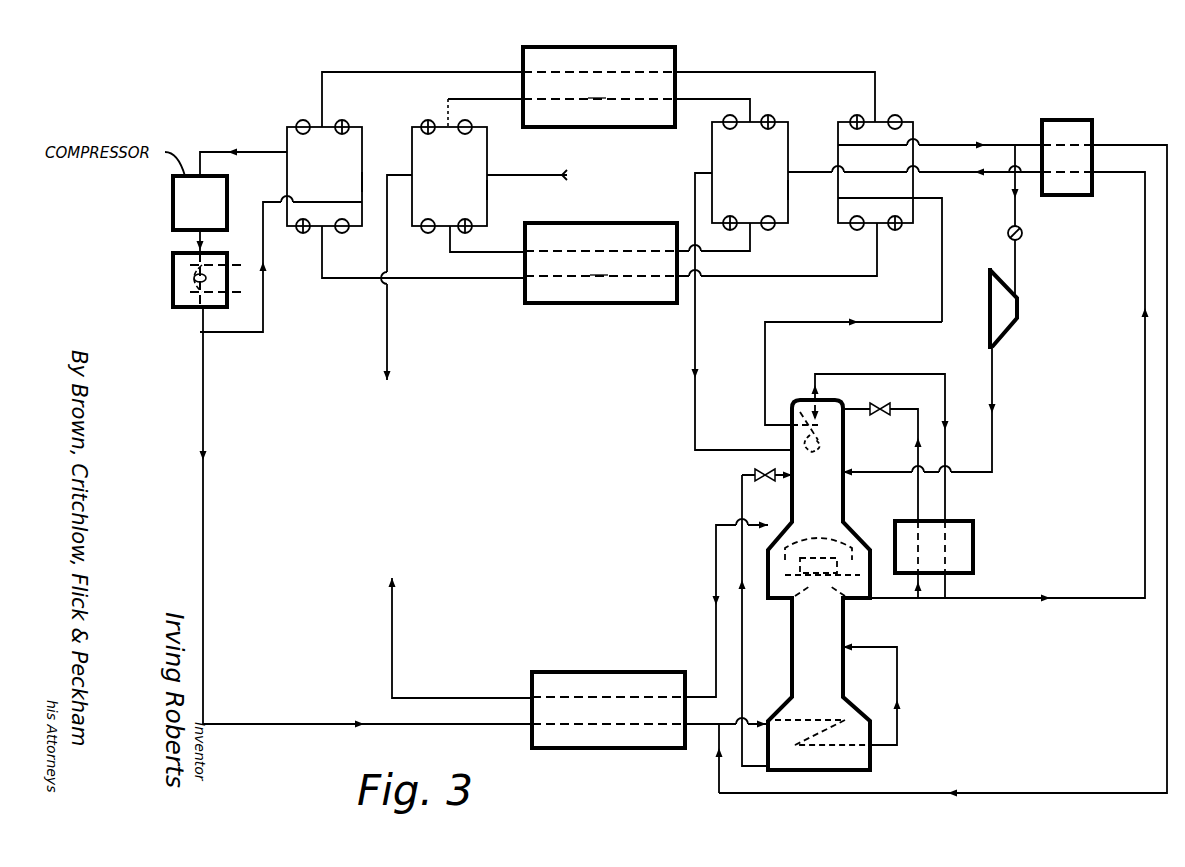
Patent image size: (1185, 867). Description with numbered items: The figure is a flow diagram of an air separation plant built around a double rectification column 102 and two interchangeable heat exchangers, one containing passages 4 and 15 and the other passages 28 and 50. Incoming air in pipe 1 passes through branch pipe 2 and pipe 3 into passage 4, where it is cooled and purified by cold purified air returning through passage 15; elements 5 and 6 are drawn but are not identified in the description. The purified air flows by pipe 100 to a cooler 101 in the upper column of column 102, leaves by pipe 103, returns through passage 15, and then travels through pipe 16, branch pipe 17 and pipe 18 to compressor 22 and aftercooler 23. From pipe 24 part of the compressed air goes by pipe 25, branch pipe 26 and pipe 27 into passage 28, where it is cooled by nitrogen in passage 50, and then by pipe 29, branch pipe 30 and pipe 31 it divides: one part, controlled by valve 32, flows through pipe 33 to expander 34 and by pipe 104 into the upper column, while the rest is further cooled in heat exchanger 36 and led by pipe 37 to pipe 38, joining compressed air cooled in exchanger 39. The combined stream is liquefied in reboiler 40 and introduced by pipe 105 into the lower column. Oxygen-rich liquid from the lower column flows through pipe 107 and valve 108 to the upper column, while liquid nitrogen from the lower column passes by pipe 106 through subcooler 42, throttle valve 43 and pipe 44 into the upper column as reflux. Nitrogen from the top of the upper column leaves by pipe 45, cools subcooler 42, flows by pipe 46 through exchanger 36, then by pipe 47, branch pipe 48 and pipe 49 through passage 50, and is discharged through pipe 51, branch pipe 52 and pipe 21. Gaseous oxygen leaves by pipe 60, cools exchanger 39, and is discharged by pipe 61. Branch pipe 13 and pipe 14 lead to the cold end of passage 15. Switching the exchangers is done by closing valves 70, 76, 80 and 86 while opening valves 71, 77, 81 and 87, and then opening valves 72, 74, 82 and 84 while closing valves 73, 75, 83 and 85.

The pipe 1 is at (517, 175).
The branch pipe 2 is at (487, 192).
The pipe 3 is at (486, 99).
The passage 4 is at (528, 100).
The line 5 is at (708, 99).
The heat exchanger 6 is at (712, 152).
The branch pipe 13 is at (912, 184).
The pipe 14 is at (780, 71).
The passage 15 is at (660, 72).
The pipe 16 is at (392, 72).
The branch pipe 17 is at (287, 168).
The pipe 18 is at (245, 148).
The pipe 21 is at (387, 323).
The compressor 22 is at (173, 188).
The aftercooler 23 is at (173, 276).
The pipe 24 is at (203, 398).
The pipe 25 is at (263, 300).
The branch pipe 26 is at (360, 183).
The pipe 27 is at (450, 280).
The passage 28 is at (543, 282).
The pipe 29 is at (790, 277).
The branch pipe 30 is at (840, 200).
The pipe 31 is at (952, 145).
The valve 32 is at (1023, 233).
The pipe 33 is at (1015, 214).
The expander 34 is at (1022, 304).
The heat exchanger 36 is at (1093, 120).
The pipe 37 is at (1167, 318).
The pipe 38 is at (703, 726).
The heat exchanger 39 is at (598, 672).
The reboiler 40 is at (800, 735).
The subcooler 42 is at (973, 534).
The throttle valve 43 is at (879, 415).
The pipe 44 is at (850, 408).
The pipe 45 is at (897, 374).
The pipe 46 is at (1145, 338).
The pipe 47 is at (968, 174).
The branch pipe 48 is at (788, 190).
The pipe 49 is at (713, 249).
The passage 50 is at (643, 251).
The pipe 51 is at (510, 251).
The branch pipe 52 is at (412, 156).
The pipe 60 is at (716, 570).
The pipe 61 is at (473, 698).
The valve 70 is at (300, 120).
The valve 71 is at (345, 120).
The valve 72 is at (425, 120).
The valve 73 is at (468, 120).
The valve 74 is at (468, 233).
The valve 75 is at (426, 234).
The valve 76 is at (342, 234).
The valve 77 is at (302, 234).
The valve 80 is at (900, 116).
The valve 81 is at (852, 116).
The valve 82 is at (771, 115).
The valve 83 is at (725, 116).
The valve 84 is at (724, 229).
The valve 85 is at (772, 230).
The valve 86 is at (857, 230).
The valve 87 is at (897, 230).
The pipe 100 is at (695, 358).
The cooler 101 is at (793, 402).
The double rectification column 102 is at (845, 502).
The pipe 103 is at (895, 322).
The pipe 104 is at (993, 388).
The pipe 105 is at (898, 672).
The pipe 106 is at (890, 600).
The pipe 107 is at (745, 638).
The valve 108 is at (753, 474).